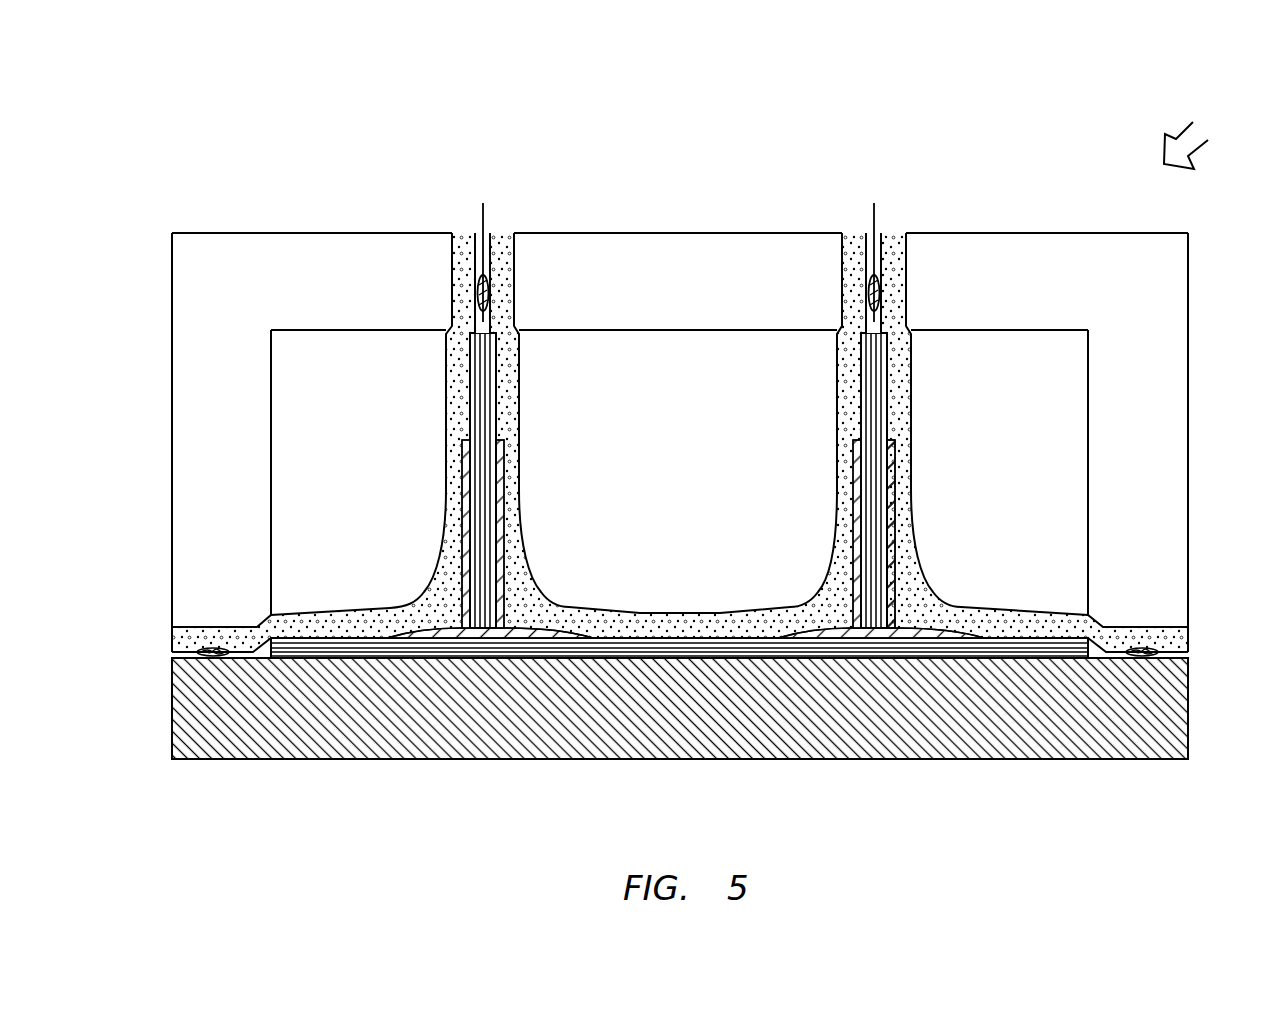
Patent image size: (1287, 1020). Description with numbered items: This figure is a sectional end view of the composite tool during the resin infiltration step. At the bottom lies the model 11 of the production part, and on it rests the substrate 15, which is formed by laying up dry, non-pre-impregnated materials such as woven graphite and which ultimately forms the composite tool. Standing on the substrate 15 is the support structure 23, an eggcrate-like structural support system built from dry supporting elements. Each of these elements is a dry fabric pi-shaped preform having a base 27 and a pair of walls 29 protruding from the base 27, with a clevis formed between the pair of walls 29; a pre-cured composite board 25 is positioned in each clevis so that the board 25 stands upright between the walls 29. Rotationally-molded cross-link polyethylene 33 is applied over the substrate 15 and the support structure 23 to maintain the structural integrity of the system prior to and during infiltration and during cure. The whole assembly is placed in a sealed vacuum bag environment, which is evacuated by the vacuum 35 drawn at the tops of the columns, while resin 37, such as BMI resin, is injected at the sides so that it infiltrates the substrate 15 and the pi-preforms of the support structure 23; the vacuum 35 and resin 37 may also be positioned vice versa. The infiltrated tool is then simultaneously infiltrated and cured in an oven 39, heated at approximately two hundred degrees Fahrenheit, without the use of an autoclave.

The model 11 is at (420, 760).
The substrate 15 is at (688, 658).
The support structure 23 is at (145, 166).
The pre-cured composite boards 25 is at (492, 402).
The base 27 is at (410, 628).
The pair of walls 29 is at (500, 546).
The rotationally-molded cross-link polyethylene 33 is at (452, 549).
The vacuum 35 is at (471, 198).
The resin 37 is at (253, 652).
The oven 39 is at (1208, 135).